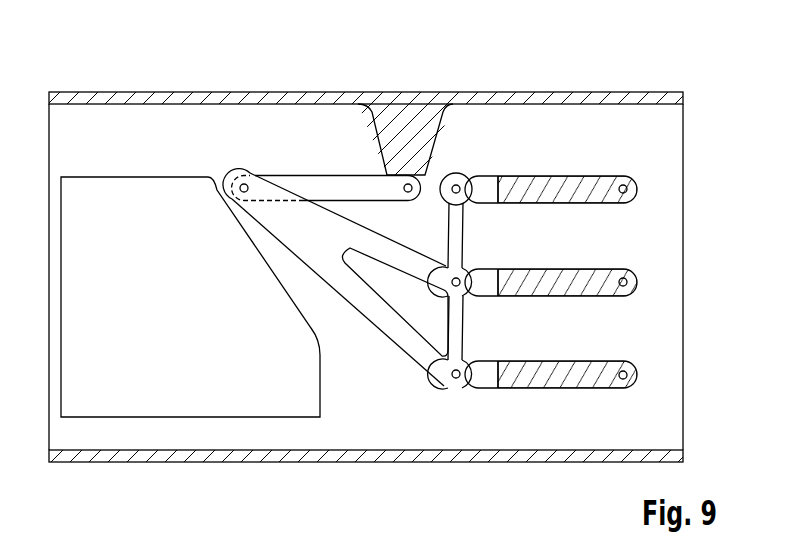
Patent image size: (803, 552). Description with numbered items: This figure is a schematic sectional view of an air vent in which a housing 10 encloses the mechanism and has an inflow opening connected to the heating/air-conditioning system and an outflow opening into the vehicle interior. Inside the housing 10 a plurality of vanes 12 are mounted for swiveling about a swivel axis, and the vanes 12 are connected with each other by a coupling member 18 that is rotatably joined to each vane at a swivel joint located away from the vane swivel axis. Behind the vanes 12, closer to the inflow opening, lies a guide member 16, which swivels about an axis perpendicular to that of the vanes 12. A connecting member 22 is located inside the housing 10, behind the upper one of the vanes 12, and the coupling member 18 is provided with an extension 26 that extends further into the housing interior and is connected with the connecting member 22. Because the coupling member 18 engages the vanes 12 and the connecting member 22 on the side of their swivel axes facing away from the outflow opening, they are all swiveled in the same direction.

The housing 10 is at (271, 98).
The vanes 12 is at (578, 178).
The guide members 16 is at (128, 190).
The coupling member 18 is at (458, 240).
The connecting member 22 is at (345, 188).
The extension 26 is at (400, 330).